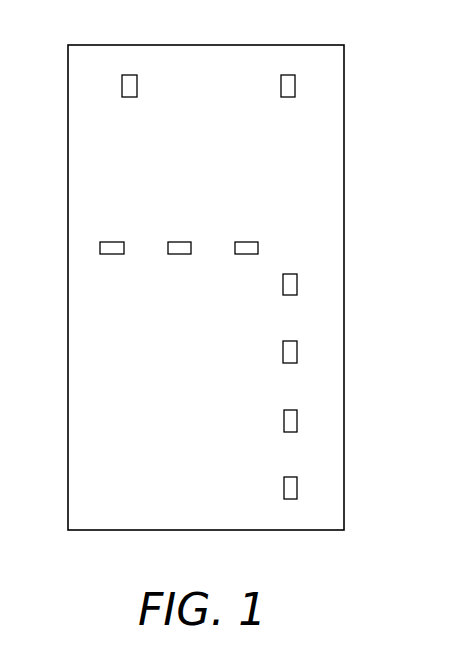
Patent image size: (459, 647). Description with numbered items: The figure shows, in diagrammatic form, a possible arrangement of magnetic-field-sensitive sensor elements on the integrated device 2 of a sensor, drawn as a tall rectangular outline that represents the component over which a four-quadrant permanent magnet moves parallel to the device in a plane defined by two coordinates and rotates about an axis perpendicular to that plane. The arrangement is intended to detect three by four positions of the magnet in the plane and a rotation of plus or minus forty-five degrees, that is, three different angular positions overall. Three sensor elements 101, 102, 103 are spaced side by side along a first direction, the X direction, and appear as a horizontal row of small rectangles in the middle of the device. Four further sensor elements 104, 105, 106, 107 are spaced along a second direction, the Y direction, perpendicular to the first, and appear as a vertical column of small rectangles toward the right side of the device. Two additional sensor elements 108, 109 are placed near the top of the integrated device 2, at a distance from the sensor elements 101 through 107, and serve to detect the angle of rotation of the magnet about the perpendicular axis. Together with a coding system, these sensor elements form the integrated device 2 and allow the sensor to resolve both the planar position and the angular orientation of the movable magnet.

The integrated device 2 is at (349, 222).
The sensor element 101 is at (113, 245).
The sensor element 102 is at (180, 245).
The sensor element 103 is at (247, 245).
The sensor element 104 is at (289, 286).
The sensor element 105 is at (289, 353).
The sensor element 106 is at (289, 421).
The sensor element 107 is at (289, 488).
The sensor element 108 is at (128, 79).
The sensor element 109 is at (288, 79).